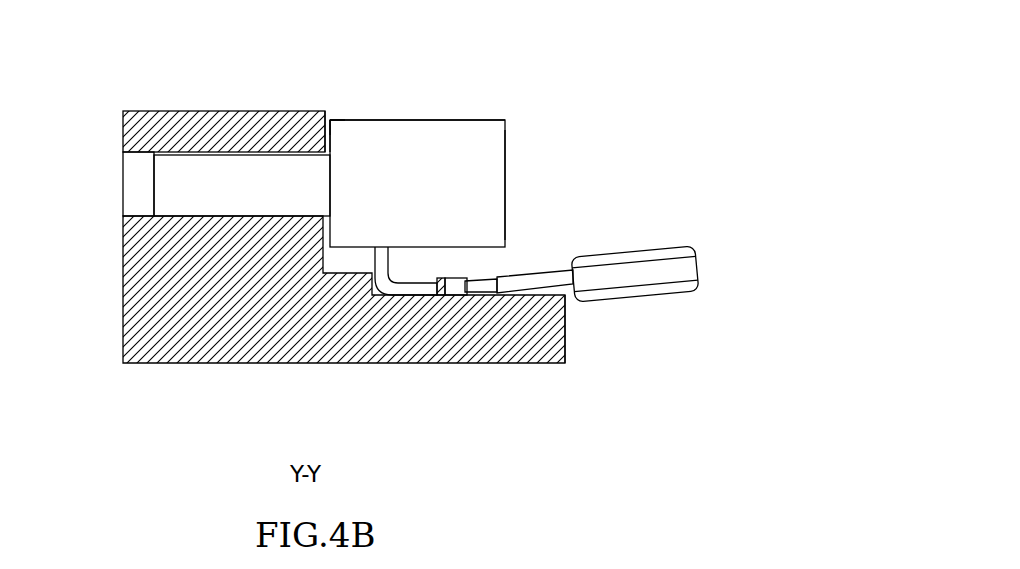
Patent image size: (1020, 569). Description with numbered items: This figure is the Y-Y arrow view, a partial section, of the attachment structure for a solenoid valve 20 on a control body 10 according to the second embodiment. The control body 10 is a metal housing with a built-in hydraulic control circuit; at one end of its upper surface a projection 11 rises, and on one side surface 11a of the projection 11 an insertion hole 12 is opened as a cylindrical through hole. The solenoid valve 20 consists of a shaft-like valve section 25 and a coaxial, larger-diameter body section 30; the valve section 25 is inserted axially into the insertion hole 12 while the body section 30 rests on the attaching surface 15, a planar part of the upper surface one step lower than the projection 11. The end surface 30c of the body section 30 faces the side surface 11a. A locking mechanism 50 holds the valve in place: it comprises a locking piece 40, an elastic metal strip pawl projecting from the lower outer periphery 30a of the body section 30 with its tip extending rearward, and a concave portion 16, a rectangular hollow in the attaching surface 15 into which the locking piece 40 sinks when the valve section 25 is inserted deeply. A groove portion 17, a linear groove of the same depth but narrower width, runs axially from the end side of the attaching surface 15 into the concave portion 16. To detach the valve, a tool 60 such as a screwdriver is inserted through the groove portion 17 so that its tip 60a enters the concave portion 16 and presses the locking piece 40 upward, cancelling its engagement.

The control body 10 is at (122, 308).
The projection 11 is at (193, 110).
The insertion hole 12 is at (136, 155).
The valve section 25 is at (244, 162).
The side surface 11a is at (327, 117).
The solenoid valve 20 is at (427, 110).
The body section 30 is at (487, 124).
The end surface 30c is at (332, 121).
The outer periphery 30a is at (492, 167).
The attaching surface 15 is at (483, 273).
The tool 60 is at (661, 247).
The groove portion 17 is at (541, 296).
The concave portion 16 is at (387, 297).
The locking piece 40 is at (430, 297).
The tip of the tool 60a is at (460, 297).
The locking mechanism 50 is at (443, 408).